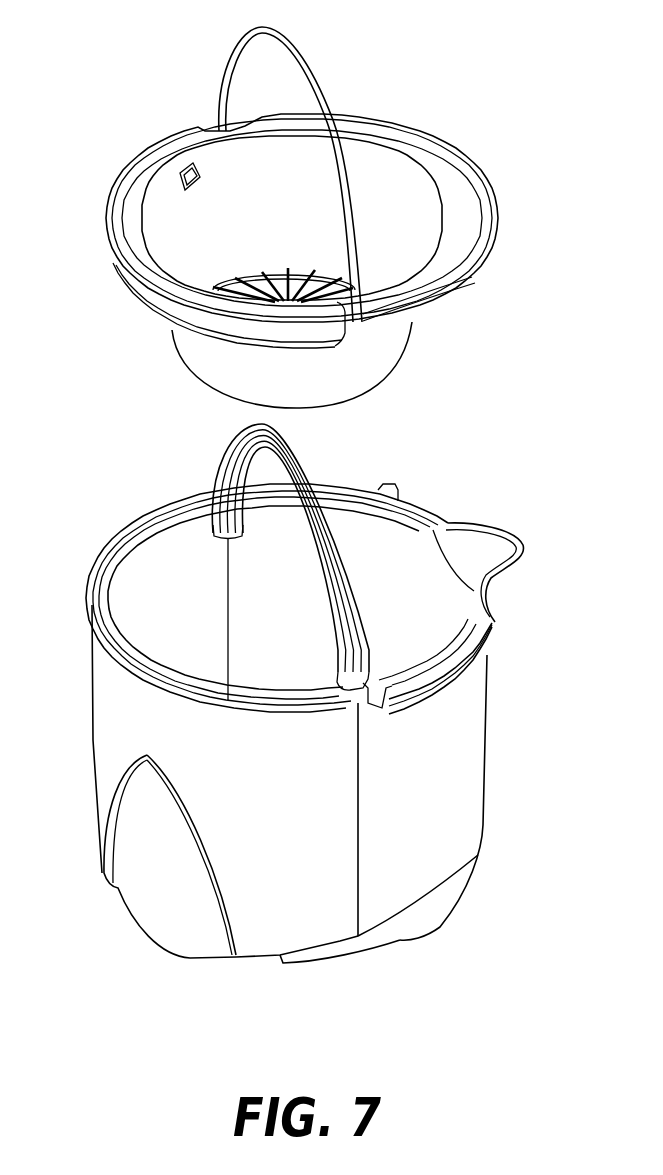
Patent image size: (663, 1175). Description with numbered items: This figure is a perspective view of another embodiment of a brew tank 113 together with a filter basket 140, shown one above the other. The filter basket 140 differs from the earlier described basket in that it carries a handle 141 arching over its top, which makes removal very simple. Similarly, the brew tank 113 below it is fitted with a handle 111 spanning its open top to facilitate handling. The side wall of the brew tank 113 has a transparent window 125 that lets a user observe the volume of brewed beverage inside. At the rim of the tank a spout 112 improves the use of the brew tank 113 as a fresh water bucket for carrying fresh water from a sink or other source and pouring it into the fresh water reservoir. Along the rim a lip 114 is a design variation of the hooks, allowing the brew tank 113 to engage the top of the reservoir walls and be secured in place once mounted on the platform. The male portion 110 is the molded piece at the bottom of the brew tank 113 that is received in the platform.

The male portion 110 is at (401, 920).
The handle 111 is at (313, 470).
The spout 112 is at (465, 550).
The brew tank 113 is at (308, 846).
The lip 114 is at (493, 637).
The transparent window 125 is at (183, 881).
The filter basket 140 is at (251, 230).
The handle 141 is at (310, 81).